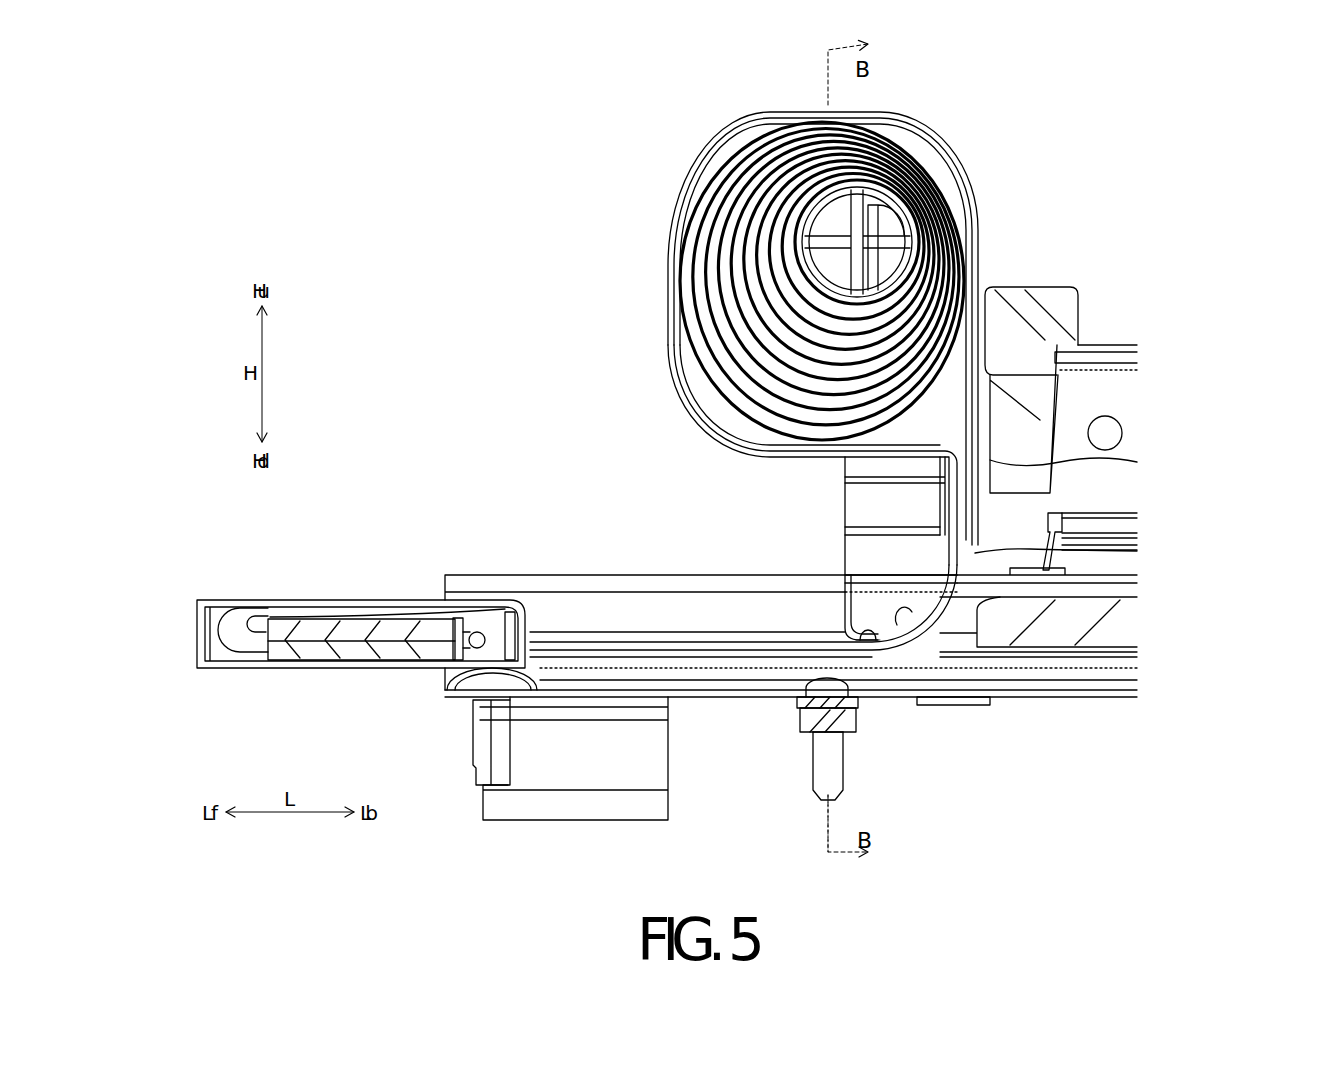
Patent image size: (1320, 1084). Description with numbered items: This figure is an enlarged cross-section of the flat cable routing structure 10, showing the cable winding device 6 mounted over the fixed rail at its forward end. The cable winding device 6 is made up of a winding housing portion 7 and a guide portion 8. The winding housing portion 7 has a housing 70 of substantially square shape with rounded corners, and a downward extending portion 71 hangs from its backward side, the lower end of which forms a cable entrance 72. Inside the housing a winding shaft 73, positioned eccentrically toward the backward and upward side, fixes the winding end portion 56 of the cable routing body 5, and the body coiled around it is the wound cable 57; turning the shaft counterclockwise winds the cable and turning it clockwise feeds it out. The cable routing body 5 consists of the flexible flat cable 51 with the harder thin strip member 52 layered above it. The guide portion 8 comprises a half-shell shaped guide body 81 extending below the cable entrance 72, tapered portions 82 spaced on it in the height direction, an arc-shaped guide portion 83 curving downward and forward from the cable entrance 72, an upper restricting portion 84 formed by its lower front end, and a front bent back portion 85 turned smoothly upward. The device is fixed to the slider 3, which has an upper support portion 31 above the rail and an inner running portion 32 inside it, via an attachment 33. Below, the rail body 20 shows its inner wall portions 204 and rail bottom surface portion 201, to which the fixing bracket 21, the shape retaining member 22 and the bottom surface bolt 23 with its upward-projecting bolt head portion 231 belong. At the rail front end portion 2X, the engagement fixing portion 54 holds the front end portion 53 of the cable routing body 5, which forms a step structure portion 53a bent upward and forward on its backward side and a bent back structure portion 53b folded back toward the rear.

The flat cable routing structure 10 is at (462, 192).
The cable winding device 6 is at (863, 309).
The housing 70 is at (985, 203).
The wound cable 57 is at (738, 155).
The winding housing portion 7 is at (655, 360).
The winding end portion 56 is at (862, 158).
The winding shaft 73 is at (820, 195).
The attachment 33 is at (1042, 285).
The slider 3 is at (1106, 335).
The upper support portion 31 is at (1120, 395).
The downward extending portion 71 is at (1060, 462).
The cable entrance 72 is at (1062, 537).
The inner running portion 32 is at (1120, 632).
The guide portion 8 is at (848, 548).
The tapered portions 82 is at (855, 480).
The guide body 81 is at (857, 510).
The upper restricting portion 84 is at (877, 635).
The arc-shaped guide portion 83 is at (918, 615).
The front bent back portion 85 is at (840, 620).
The cable routing body 5 is at (586, 660).
The thin strip member 52 is at (653, 655).
The flexible flat cable 51 is at (720, 670).
The rail body 20 is at (692, 570).
The inner wall portions 204 is at (605, 605).
The rail front end portion 2X is at (472, 572).
The engagement fixing portion 54 is at (318, 595).
The bent back structure portion 53b is at (222, 665).
The front end portion 53 is at (255, 660).
The step structure portion 53a is at (488, 610).
The fixing bracket 21 is at (670, 812).
The rail bottom surface portion 201 is at (690, 700).
The shape retaining member 22 is at (985, 705).
The bottom surface bolt 23 is at (845, 783).
The bolt head portion 231 is at (808, 668).